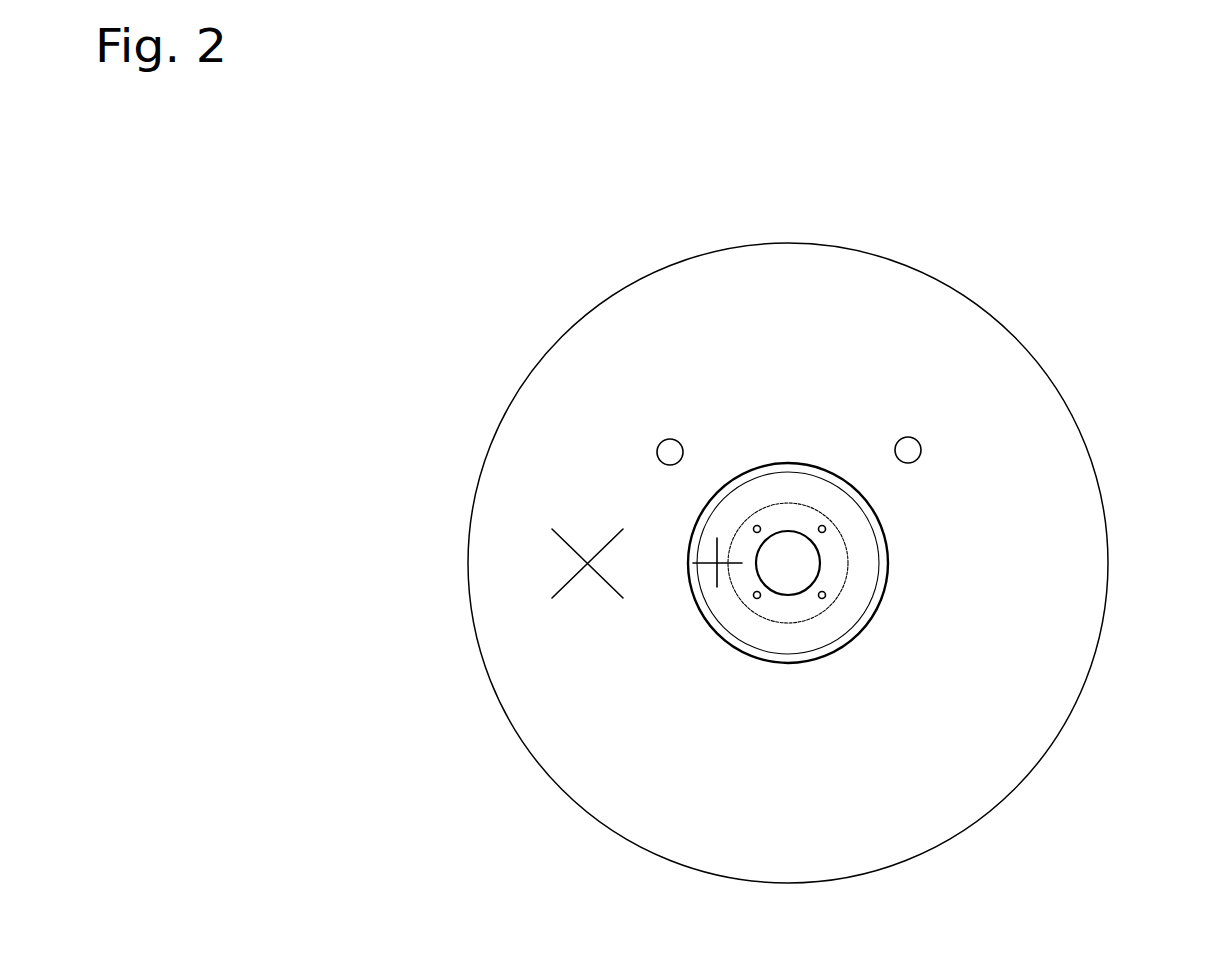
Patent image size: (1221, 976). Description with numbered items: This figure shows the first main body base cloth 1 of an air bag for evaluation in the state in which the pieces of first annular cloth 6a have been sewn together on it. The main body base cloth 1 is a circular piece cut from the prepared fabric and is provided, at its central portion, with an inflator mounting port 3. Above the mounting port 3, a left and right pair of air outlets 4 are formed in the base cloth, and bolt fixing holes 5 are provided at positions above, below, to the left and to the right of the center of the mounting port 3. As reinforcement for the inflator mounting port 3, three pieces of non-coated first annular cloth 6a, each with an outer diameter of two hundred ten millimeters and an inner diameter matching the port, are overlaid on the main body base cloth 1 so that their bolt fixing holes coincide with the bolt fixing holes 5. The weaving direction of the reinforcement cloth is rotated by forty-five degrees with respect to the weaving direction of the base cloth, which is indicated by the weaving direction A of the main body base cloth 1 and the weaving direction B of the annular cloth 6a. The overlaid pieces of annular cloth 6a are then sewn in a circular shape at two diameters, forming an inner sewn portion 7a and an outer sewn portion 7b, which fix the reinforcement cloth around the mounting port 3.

The main body base cloth 1 is at (782, 352).
The inflator mounting port 3 is at (788, 563).
The air outlet 4 is at (908, 435).
The bolt fixing hole 5 is at (823, 595).
The first annular cloth 6a is at (880, 515).
The sewn portion 7a is at (780, 623).
The sewn portion 7b is at (707, 607).
The weaving direction of main body base cloth A is at (590, 540).
The weaving direction of annular cloth B is at (715, 527).